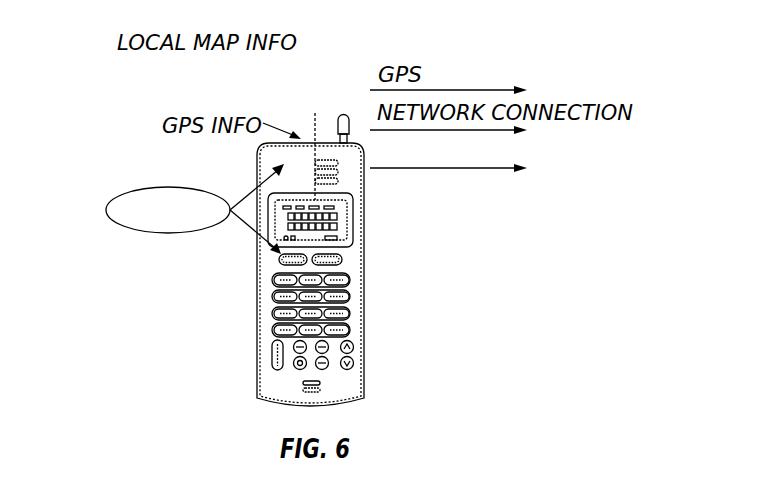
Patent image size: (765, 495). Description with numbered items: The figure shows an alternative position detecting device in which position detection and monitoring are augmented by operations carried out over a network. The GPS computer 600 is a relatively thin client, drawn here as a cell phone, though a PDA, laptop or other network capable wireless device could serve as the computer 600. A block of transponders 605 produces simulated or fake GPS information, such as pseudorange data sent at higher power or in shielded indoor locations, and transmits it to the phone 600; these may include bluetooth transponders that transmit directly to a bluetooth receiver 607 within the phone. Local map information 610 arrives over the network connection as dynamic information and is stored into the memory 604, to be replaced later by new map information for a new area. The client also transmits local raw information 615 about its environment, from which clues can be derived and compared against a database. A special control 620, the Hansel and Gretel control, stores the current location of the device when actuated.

The GPS computer 600 is at (365, 313).
The memory 604 is at (345, 230).
The transponder 605 is at (148, 187).
The bluetooth receiver 607 is at (280, 263).
The local map information 610 is at (309, 117).
The local raw information 615 is at (487, 155).
The special control 620 is at (341, 260).